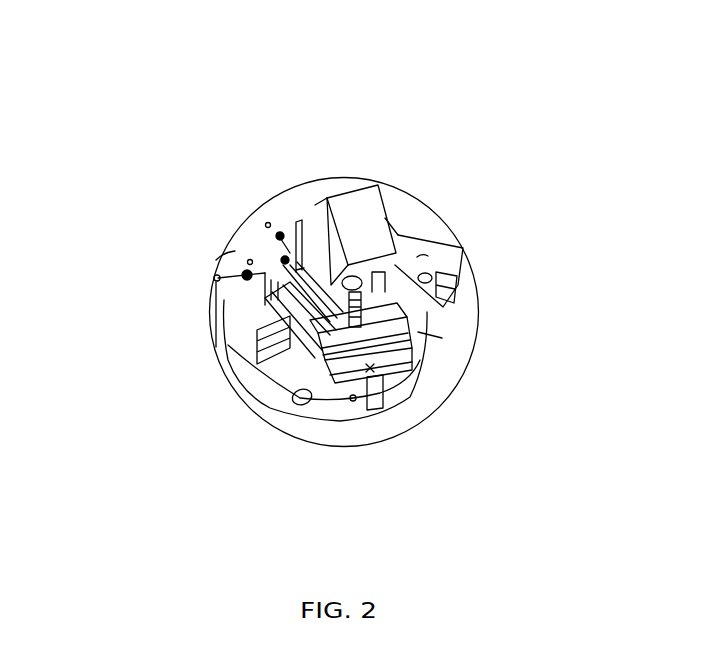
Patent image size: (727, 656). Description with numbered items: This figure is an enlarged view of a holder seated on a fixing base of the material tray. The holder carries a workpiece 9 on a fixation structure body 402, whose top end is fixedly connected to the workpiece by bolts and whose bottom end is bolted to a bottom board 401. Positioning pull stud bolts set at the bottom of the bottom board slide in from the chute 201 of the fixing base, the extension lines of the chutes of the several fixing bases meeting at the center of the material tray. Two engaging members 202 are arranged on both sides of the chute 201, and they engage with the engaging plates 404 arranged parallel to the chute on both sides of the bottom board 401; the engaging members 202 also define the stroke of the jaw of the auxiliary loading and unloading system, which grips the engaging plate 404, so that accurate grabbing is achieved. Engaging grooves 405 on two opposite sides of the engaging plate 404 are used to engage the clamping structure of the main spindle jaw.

The workpiece 9 is at (375, 218).
The chute 201 is at (377, 401).
The engaging member 202 is at (271, 355).
The bottom board 401 is at (282, 286).
The fixation structure body 402 is at (306, 260).
The engaging plate 404 is at (268, 326).
The engaging groove 405 is at (407, 348).